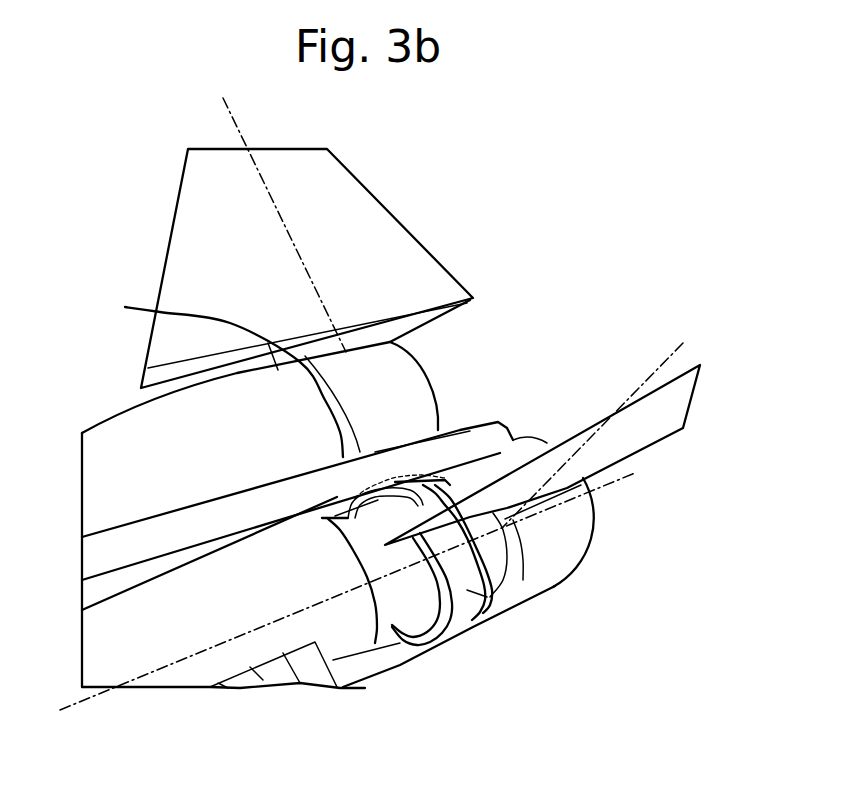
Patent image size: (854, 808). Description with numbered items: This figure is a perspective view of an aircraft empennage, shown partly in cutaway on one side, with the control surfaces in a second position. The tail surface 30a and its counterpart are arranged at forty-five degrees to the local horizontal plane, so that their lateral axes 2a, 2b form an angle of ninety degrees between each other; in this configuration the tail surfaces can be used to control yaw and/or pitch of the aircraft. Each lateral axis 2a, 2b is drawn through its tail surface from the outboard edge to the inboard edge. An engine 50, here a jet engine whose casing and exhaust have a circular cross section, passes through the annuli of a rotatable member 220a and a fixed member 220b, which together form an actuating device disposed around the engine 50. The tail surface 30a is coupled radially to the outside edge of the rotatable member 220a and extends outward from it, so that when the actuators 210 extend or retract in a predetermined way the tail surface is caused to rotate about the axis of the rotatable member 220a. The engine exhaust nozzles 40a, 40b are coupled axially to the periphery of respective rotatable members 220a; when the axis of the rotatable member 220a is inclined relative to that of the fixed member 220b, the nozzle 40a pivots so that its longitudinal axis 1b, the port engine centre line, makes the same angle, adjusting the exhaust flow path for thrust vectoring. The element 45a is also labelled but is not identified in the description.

The lateral axis 2a is at (232, 117).
The tail surface 30a is at (378, 197).
The fin fairing / attachment 45a is at (209, 373).
The engine exhaust nozzle 40a is at (418, 357).
The actuator 210 is at (440, 487).
The lateral axis 2b is at (662, 360).
The port engine centre line 1b is at (620, 482).
The engine exhaust nozzle 40b is at (573, 547).
The rotatable member 220a is at (502, 582).
The fixed member 220b is at (452, 620).
The engine 50 is at (387, 617).